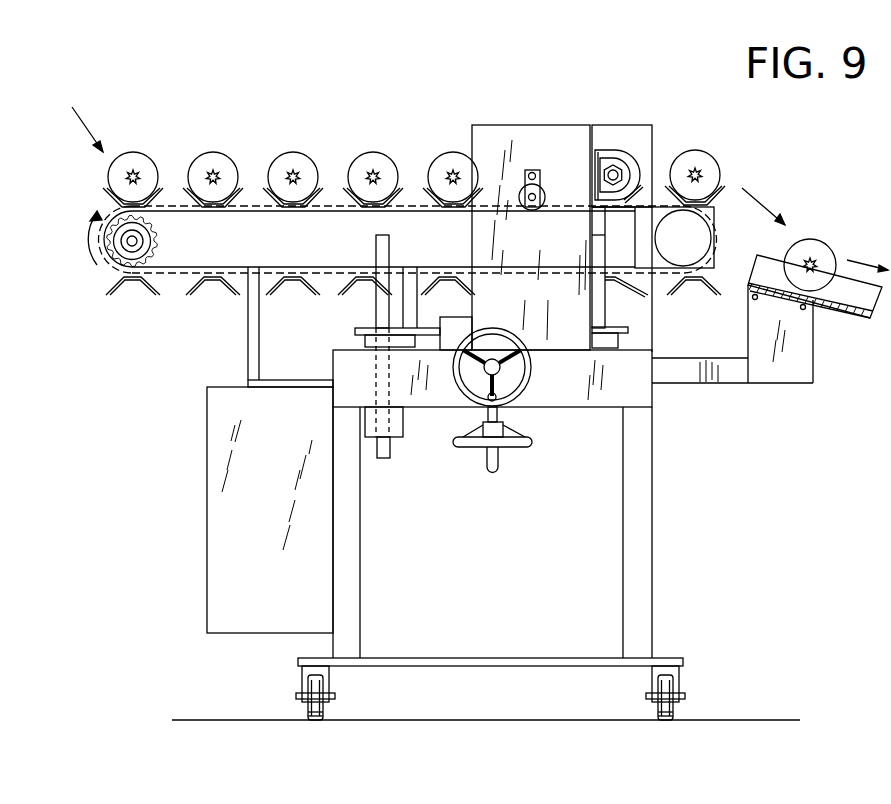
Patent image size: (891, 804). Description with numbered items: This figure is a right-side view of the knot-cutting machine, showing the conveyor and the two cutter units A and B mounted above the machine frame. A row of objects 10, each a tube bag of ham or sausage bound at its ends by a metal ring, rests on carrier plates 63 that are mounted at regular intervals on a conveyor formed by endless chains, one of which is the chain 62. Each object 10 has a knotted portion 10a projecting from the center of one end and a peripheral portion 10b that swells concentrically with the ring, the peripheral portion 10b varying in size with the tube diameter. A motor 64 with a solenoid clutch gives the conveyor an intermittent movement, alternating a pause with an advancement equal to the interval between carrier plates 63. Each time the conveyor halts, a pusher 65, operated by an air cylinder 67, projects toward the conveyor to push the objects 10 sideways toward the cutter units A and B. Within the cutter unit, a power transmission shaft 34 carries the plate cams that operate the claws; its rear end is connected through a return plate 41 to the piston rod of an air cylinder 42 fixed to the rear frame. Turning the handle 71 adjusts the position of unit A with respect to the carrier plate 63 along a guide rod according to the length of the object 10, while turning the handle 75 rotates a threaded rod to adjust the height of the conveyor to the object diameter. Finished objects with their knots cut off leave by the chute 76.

The object 10 is at (146, 162).
The knotted portion 10a is at (378, 170).
The peripheral portion 10b is at (363, 157).
The power transmission shaft 34 is at (535, 172).
The return plate 41 is at (541, 177).
The air cylinder 42 is at (528, 208).
The endless chain 62 is at (260, 208).
The carrier plate 63 is at (214, 212).
The motor 64 is at (700, 234).
The pusher 65 is at (635, 158).
The air cylinder 67 is at (620, 200).
The handle 71 is at (531, 366).
The handle 75 is at (533, 443).
The chute 76 is at (840, 316).
The cutter unit A is at (507, 135).
The cutter unit B is at (615, 130).